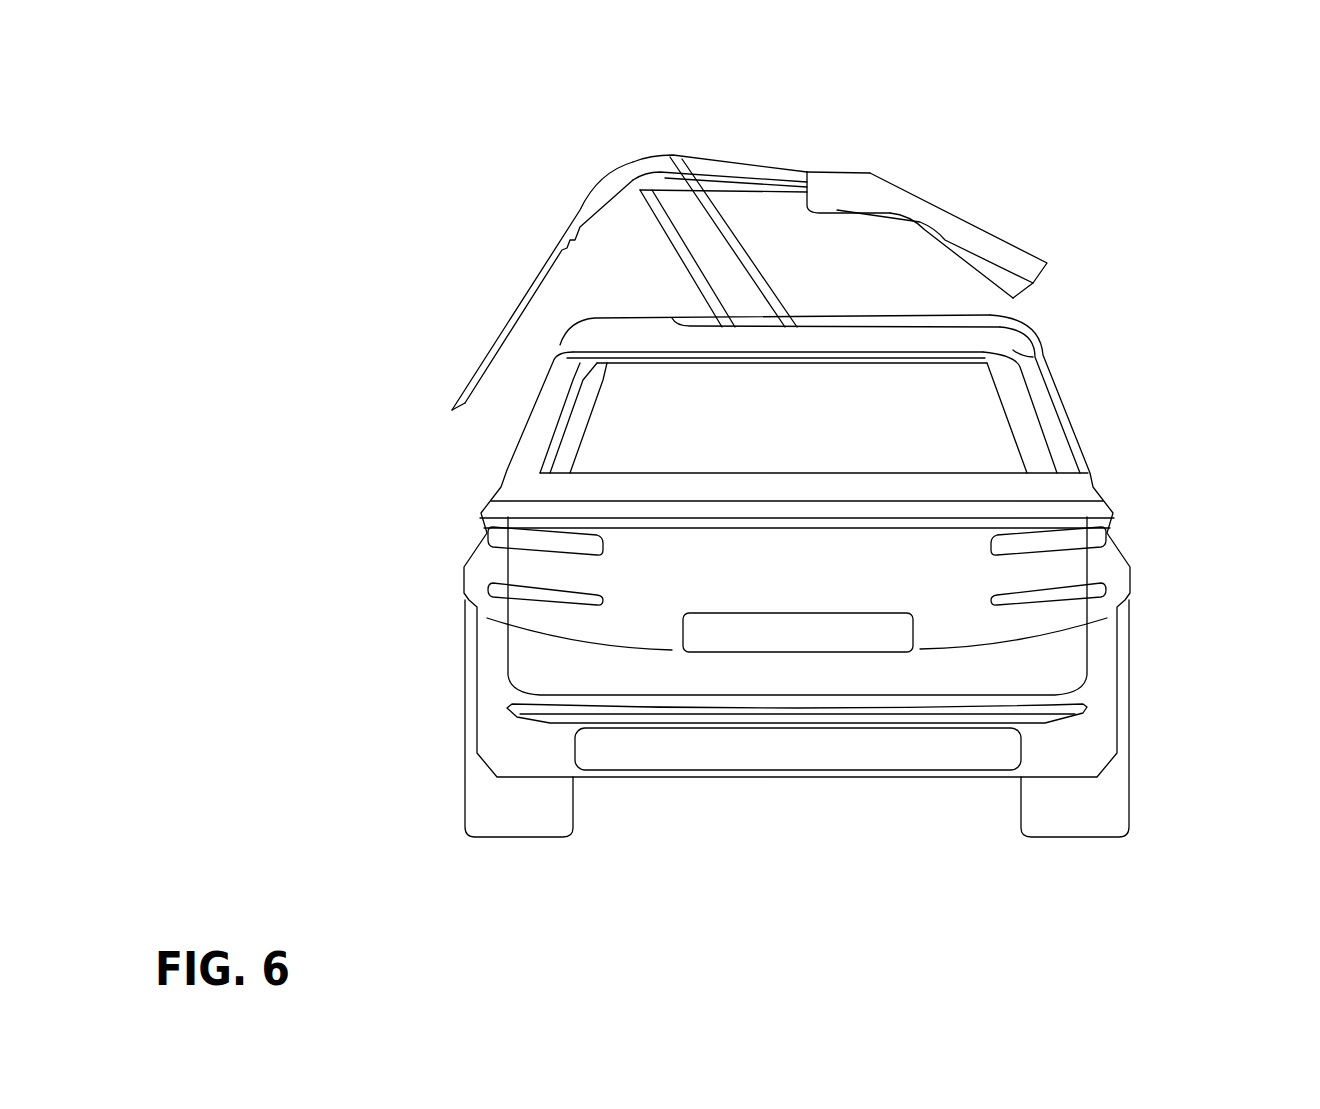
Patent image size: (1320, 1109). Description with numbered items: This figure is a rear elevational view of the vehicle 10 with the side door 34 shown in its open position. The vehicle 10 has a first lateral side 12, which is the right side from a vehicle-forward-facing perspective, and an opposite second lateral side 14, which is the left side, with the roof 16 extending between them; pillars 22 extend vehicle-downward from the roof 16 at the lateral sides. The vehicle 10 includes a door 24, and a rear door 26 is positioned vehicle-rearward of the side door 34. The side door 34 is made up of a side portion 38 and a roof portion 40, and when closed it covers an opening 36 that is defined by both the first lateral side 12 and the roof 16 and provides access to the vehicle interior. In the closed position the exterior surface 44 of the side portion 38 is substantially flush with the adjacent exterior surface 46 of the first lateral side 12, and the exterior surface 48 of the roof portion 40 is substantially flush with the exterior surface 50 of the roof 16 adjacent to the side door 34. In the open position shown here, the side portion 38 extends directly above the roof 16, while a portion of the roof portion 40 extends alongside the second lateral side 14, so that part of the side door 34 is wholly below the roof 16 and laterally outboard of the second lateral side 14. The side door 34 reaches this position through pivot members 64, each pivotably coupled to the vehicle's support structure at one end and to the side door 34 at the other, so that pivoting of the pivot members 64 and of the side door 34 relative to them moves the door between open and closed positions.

The vehicle 10 is at (490, 151).
The first lateral side 12 is at (1140, 560).
The second lateral side 14 is at (462, 546).
The roof 16 is at (623, 340).
The pillars 22 is at (523, 432).
The door 24 is at (863, 162).
The rear door 26 is at (797, 687).
The side door 34 is at (884, 140).
The opening 36 is at (880, 322).
The side portion 38 is at (1013, 230).
The roof portion 40 is at (470, 382).
The exterior surface 44 is at (933, 200).
The exterior surface 46 is at (1117, 530).
The exterior surface 48 is at (563, 243).
The exterior surface 50 is at (657, 340).
The pivot members 64 is at (627, 263).